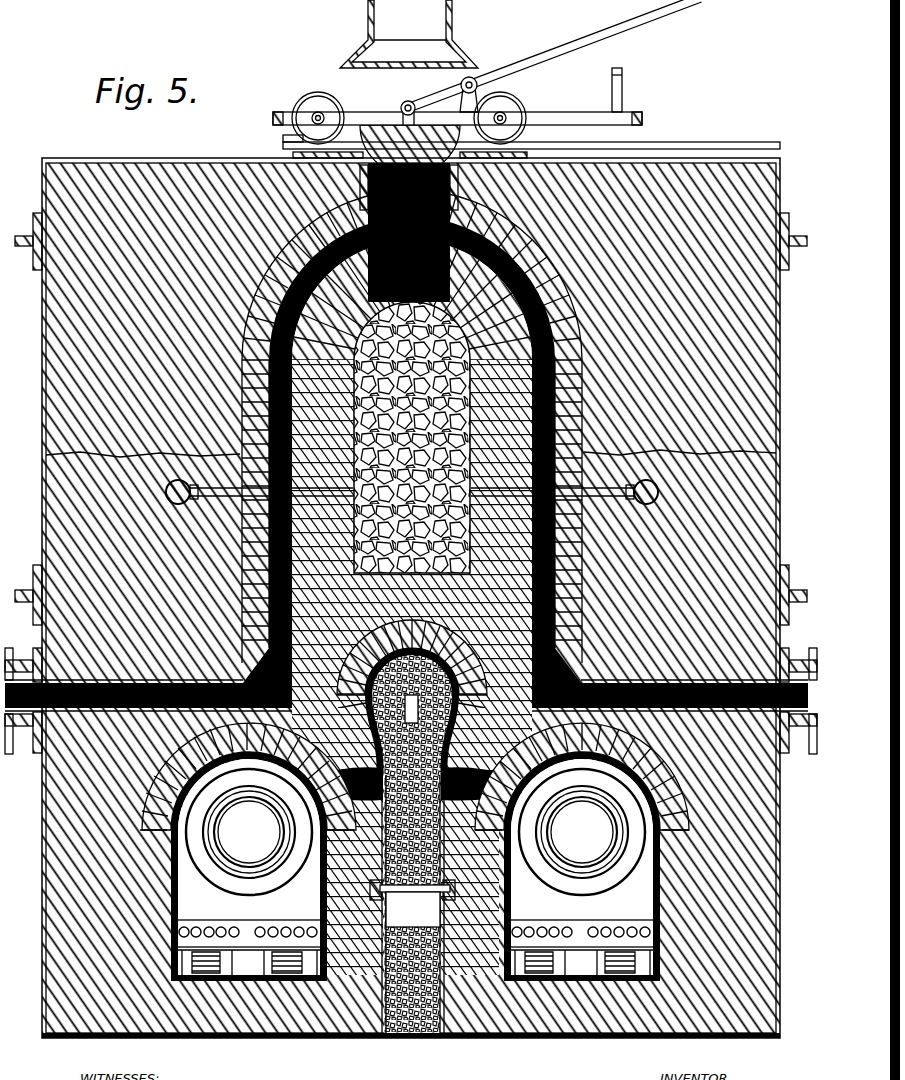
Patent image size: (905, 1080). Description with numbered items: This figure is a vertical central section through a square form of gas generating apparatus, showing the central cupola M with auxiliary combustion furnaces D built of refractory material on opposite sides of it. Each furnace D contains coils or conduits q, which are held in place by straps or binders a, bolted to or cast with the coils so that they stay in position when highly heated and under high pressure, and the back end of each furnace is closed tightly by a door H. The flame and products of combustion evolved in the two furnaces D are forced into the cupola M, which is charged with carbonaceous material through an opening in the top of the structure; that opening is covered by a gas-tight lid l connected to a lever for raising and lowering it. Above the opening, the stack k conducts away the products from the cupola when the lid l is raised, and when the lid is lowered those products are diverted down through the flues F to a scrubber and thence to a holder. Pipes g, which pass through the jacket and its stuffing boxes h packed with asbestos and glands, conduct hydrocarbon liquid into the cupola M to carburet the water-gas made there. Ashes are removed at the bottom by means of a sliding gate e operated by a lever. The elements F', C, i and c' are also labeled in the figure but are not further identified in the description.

The stack k is at (411, 393).
The lid l is at (526, 87).
The arched brick lining F' is at (408, 426).
The cupola M is at (472, 394).
The pipes g is at (411, 508).
The shaft chamber C is at (472, 597).
The flues F is at (406, 464).
The hearth i is at (413, 797).
The stuffing boxes h is at (412, 802).
The doors H is at (415, 832).
The furnaces D is at (195, 900).
The coils q is at (297, 930).
The straps or binders a is at (414, 939).
The sliding gate e is at (412, 903).
The discharge channel c' is at (397, 904).